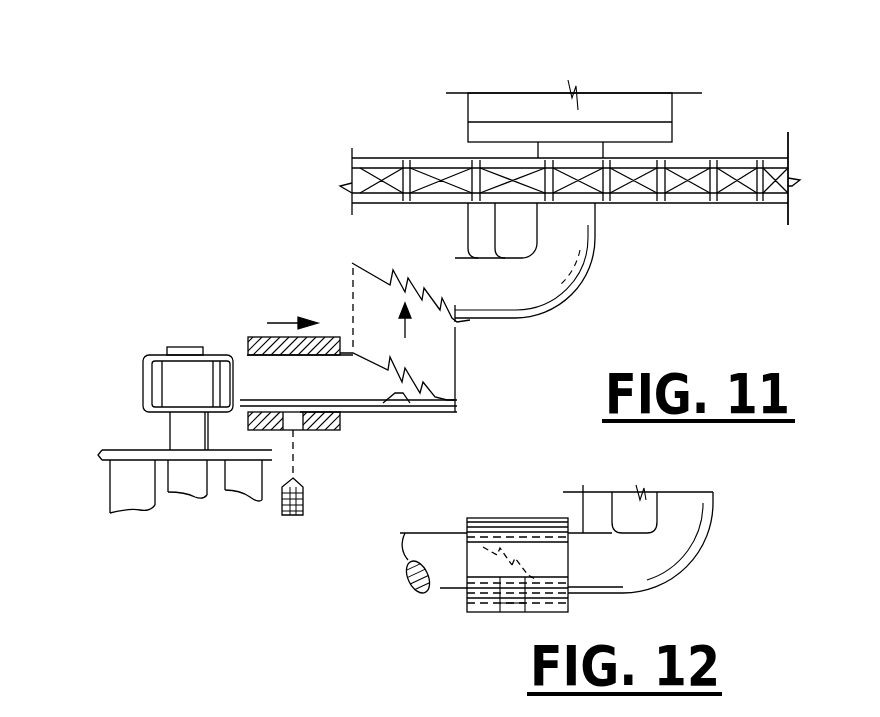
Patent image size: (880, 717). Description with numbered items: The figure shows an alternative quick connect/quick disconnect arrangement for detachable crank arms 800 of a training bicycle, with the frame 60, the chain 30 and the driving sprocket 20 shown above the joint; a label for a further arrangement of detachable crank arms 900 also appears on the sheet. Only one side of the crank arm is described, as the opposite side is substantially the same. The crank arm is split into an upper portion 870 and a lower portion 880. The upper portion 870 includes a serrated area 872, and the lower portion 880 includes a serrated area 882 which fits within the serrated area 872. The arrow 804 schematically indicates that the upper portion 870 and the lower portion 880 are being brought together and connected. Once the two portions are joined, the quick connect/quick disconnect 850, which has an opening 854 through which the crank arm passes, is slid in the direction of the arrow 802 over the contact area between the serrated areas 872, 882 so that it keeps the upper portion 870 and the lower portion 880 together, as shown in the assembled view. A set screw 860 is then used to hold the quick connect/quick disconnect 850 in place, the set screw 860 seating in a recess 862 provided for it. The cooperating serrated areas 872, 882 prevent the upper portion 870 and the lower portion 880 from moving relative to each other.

In FIG. 11, the detachable crank arms 800 is at (180, 146).
In FIG. 11, the frame 60 is at (620, 112).
In FIG. 11, the chain 30 is at (738, 160).
In FIG. 11, the driving sprocket 20 is at (775, 185).
In FIG. 11, the upper portion of first crank arm 870 is at (523, 288).
In FIG. 12, the upper portion of first crank arm 870 is at (660, 553).
In FIG. 11, the serrated area of upper portion of first crank arm 872 is at (420, 295).
In FIG. 12, the serrated area of upper portion of first crank arm 872 is at (567, 565).
In FIG. 11, the arrow 802 is at (298, 322).
In FIG. 11, the arrow 804 is at (407, 333).
In FIG. 11, the serrated area of lower portion of first crank arm 882 is at (427, 395).
In FIG. 12, the serrated area of lower portion of first crank arm 882 is at (524, 569).
In FIG. 11, the lower portion of first crank arm 880 is at (357, 412).
In FIG. 12, the lower portion of first crank arm 880 is at (437, 553).
In FIG. 11, the recess for set screw 862 is at (398, 412).
In FIG. 11, the quick connect/quick disconnect 850 is at (265, 410).
In FIG. 12, the quick connect/quick disconnect 850 is at (490, 537).
In FIG. 11, the opening 854 is at (250, 375).
In FIG. 11, the set screw 860 is at (282, 512).
In FIG. 12, the set screw 860 is at (510, 612).
In FIG. 12, the detachable crank arms 900 is at (35, 704).